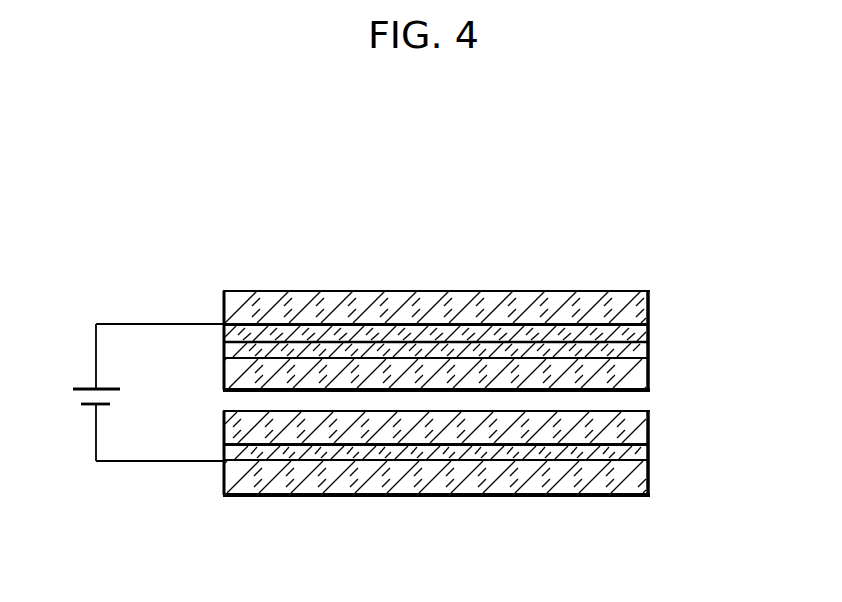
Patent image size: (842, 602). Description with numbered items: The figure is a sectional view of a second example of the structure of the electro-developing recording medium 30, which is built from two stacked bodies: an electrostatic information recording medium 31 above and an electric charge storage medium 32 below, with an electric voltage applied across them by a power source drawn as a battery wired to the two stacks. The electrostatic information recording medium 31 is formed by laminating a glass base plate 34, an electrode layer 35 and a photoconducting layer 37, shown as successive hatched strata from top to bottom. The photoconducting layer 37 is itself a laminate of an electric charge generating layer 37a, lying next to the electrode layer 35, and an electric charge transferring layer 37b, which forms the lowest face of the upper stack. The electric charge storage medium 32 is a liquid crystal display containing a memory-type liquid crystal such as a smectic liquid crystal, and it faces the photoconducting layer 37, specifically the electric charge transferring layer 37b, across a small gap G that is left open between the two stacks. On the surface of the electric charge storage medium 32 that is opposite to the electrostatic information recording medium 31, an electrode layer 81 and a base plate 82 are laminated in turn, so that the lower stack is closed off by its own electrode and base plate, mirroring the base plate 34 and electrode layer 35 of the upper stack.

The electro-developing recording medium 30 is at (198, 486).
The electrostatic information recording medium 31 is at (311, 288).
The electric charge storage medium 32 is at (650, 422).
The base plate 34 is at (550, 299).
The electrode layer 35 is at (650, 333).
The photoconducting layer 37 is at (655, 342).
The electric charge generating layer 37a is at (224, 349).
The electric charge transferring layer 37b is at (224, 370).
The electrode layer 81 is at (650, 455).
The base plate 82 is at (493, 486).
The gap G is at (638, 401).